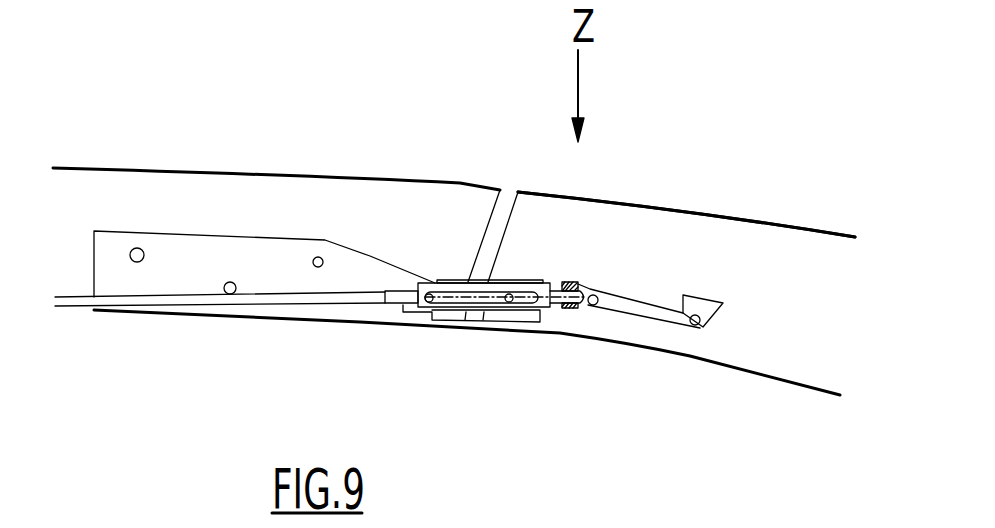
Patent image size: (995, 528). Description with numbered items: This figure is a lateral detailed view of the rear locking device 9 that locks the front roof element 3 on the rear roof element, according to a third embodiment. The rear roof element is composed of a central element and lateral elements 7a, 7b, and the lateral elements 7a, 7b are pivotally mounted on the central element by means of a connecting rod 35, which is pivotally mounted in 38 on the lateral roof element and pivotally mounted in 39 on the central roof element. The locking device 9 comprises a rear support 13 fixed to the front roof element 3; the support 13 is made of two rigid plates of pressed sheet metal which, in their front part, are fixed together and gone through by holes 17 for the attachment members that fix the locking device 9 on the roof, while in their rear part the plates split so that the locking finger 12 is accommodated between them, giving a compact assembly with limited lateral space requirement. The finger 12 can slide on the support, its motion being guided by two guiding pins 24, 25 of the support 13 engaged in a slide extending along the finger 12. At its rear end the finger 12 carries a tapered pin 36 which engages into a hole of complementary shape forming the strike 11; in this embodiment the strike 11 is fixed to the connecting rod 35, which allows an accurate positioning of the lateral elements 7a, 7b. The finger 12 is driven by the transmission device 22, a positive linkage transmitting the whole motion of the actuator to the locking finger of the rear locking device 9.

The front roof element 3 is at (352, 175).
The lateral element 7a is at (762, 268).
The lateral element 7b is at (686, 214).
The rear locking device 9 is at (538, 384).
The strike 11 is at (567, 282).
The locking finger 12 is at (505, 282).
The rear support 13 is at (286, 255).
The holes 17 is at (228, 282).
The transmission device 22 is at (80, 303).
The guiding pin 24 is at (432, 312).
The guiding pin 25 is at (507, 308).
The connecting rod 35 is at (647, 313).
The tapered pin 36 is at (573, 308).
The pivot mounting on lateral roof element 38 is at (644, 349).
The pivot mounting on central roof element 39 is at (697, 328).